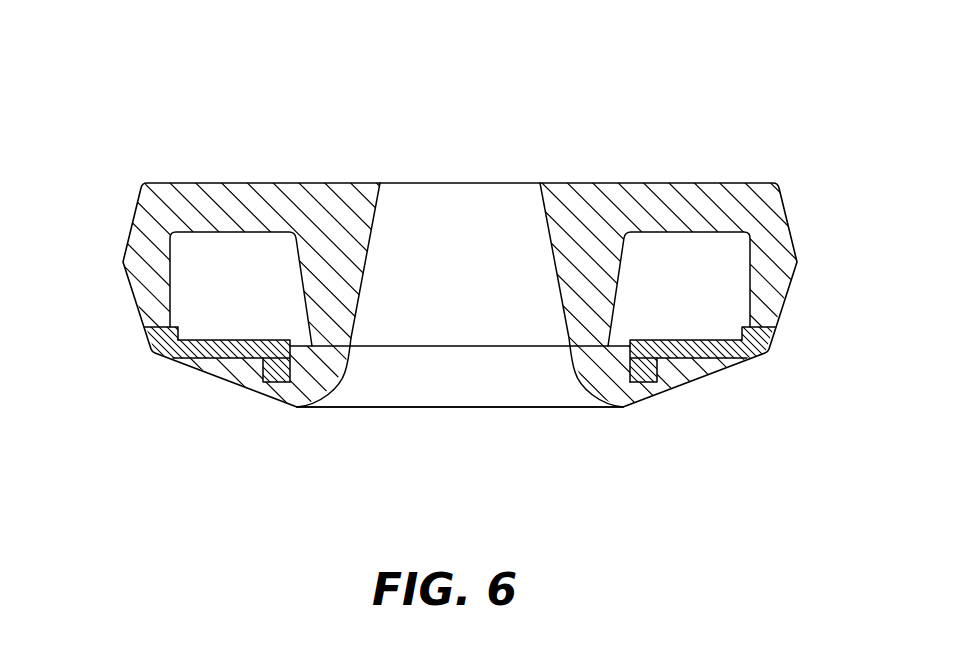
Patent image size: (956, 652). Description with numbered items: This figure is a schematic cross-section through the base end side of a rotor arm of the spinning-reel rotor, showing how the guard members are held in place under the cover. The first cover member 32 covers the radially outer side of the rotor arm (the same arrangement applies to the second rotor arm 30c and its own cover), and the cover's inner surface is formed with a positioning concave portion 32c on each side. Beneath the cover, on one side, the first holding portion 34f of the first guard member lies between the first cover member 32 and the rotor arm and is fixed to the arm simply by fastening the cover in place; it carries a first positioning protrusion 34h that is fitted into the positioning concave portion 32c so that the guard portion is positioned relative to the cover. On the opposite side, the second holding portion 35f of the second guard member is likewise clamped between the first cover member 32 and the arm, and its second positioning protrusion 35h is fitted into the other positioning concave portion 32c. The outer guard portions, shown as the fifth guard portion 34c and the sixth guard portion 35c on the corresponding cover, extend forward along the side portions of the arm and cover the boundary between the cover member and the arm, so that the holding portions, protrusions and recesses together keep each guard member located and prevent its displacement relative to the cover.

The second rotor arm 30c is at (702, 170).
The positioning concave portion 32c is at (288, 340).
The first cover member 32 is at (580, 402).
The fifth guard portion 34c is at (154, 356).
The first holding portion 34f is at (258, 365).
The first positioning protrusion 34h is at (275, 384).
The sixth guard portion 35c is at (764, 356).
The second holding portion 35f is at (676, 362).
The second positioning protrusion 35h is at (640, 384).